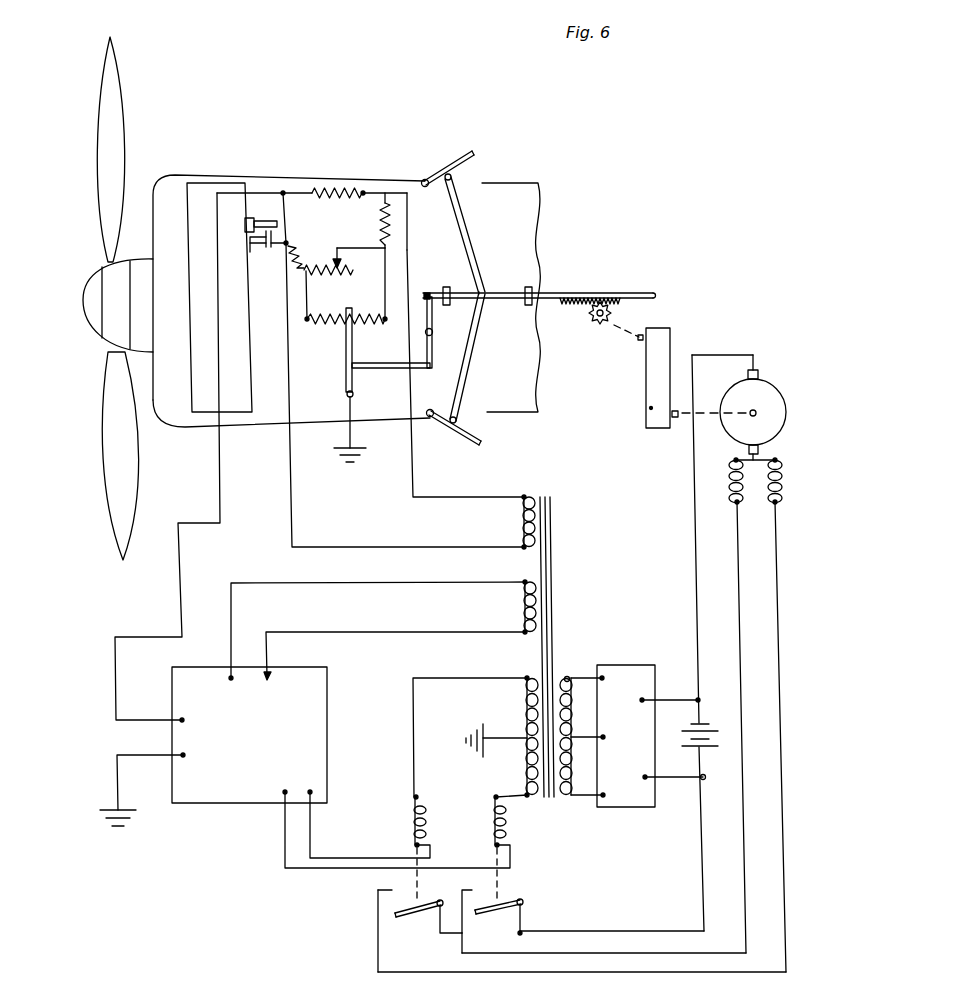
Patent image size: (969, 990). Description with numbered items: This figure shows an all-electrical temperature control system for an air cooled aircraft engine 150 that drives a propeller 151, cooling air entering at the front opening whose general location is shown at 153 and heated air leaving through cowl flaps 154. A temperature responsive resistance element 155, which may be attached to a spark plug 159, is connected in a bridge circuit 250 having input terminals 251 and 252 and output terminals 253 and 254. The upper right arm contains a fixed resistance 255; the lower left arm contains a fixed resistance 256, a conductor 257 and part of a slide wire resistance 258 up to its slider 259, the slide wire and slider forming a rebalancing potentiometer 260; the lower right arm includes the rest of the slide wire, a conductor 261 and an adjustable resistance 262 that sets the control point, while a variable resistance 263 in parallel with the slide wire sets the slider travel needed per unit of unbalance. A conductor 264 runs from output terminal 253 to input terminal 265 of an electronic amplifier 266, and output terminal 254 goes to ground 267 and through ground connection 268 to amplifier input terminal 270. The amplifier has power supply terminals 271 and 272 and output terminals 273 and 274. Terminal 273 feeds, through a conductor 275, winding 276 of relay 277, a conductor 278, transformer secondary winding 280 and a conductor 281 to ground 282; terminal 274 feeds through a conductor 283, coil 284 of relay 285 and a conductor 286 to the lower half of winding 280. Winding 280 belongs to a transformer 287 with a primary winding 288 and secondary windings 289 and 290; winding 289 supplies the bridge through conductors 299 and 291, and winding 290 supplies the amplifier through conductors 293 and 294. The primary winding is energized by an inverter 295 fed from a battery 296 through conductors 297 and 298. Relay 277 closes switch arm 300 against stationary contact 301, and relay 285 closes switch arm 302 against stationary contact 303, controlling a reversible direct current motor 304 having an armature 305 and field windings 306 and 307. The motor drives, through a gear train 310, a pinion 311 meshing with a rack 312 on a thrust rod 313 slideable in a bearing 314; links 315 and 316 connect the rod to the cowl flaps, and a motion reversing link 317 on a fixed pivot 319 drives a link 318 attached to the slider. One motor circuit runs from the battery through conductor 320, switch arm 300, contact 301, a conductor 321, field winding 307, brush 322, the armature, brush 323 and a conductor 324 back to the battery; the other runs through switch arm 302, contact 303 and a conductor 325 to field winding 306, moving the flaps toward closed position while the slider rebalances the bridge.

The aircraft engine 150 is at (186, 215).
The propeller 151 is at (112, 375).
The cooling air opening 153 is at (154, 232).
The cowl flaps 154 is at (450, 157).
The temperature responsive resistance element 155 is at (252, 252).
The spark plug 159 is at (262, 215).
The bridge circuit 250 is at (348, 231).
The input terminal 251 is at (294, 220).
The input terminal 252 is at (390, 227).
The output terminal 253 is at (282, 191).
The output terminal 254 is at (346, 395).
The fixed resistance 255 is at (340, 198).
The fixed resistance 256 is at (309, 252).
The conductor 257 is at (328, 292).
The slide wire resistance 258 is at (325, 327).
The slider 259 is at (353, 335).
The rebalancing potentiometer 260 is at (332, 352).
The conductor 261 is at (384, 287).
The adjustable resistance 262 is at (378, 236).
The variable resistance 263 is at (344, 264).
The conductor 264 is at (185, 563).
The input terminal 265 is at (184, 720).
The electronic amplifier 266 is at (223, 808).
The ground 267 is at (333, 429).
The ground connection 268 is at (118, 806).
The input terminal 270 is at (185, 756).
The power supply terminal 271 is at (229, 679).
The power supply terminal 272 is at (291, 682).
The output terminal 273 is at (310, 785).
The output terminal 274 is at (283, 792).
The conductor 275 is at (340, 858).
The relay winding 276 is at (425, 818).
The relay 277 is at (395, 792).
The conductor 278 is at (436, 682).
The transformer secondary winding 280 is at (520, 698).
The conductor 281 is at (516, 741).
The ground 282 is at (492, 733).
The conductor 283 is at (308, 870).
The relay coil 284 is at (506, 818).
The relay 285 is at (470, 794).
The conductor 286 is at (508, 786).
The transformer 287 is at (559, 805).
The primary winding 288 is at (582, 661).
The secondary winding 289 is at (512, 520).
The secondary winding 290 is at (512, 602).
The conductor 291 is at (414, 478).
The conductor 293 is at (233, 603).
The conductor 294 is at (322, 631).
The inverter 295 is at (610, 809).
The battery 296 is at (701, 728).
The conductor 297 is at (669, 698).
The conductor 298 is at (669, 781).
The conductor 299 is at (294, 526).
The switch arm 300 is at (426, 922).
The stationary contact 301 is at (403, 898).
The switch arm 302 is at (500, 914).
The stationary contact 303 is at (484, 884).
The reversible direct current motor 304 is at (782, 350).
The armature 305 is at (774, 401).
The field winding 306 is at (729, 494).
The field winding 307 is at (783, 478).
The gear train 310 is at (645, 410).
The pinion 311 is at (600, 326).
The rack 312 is at (618, 297).
The thrust rod 313 is at (558, 292).
The bearing 314 is at (445, 307).
The link 315 is at (468, 231).
The link 316 is at (473, 343).
The motion reversing link 317 is at (434, 340).
The link 318 is at (419, 370).
The fixed pivot 319 is at (425, 334).
The conductor 320 is at (703, 858).
The conductor 321 is at (782, 735).
The brush 322 is at (762, 452).
The brush 323 is at (760, 375).
The conductor 324 is at (692, 510).
The conductor 325 is at (741, 640).